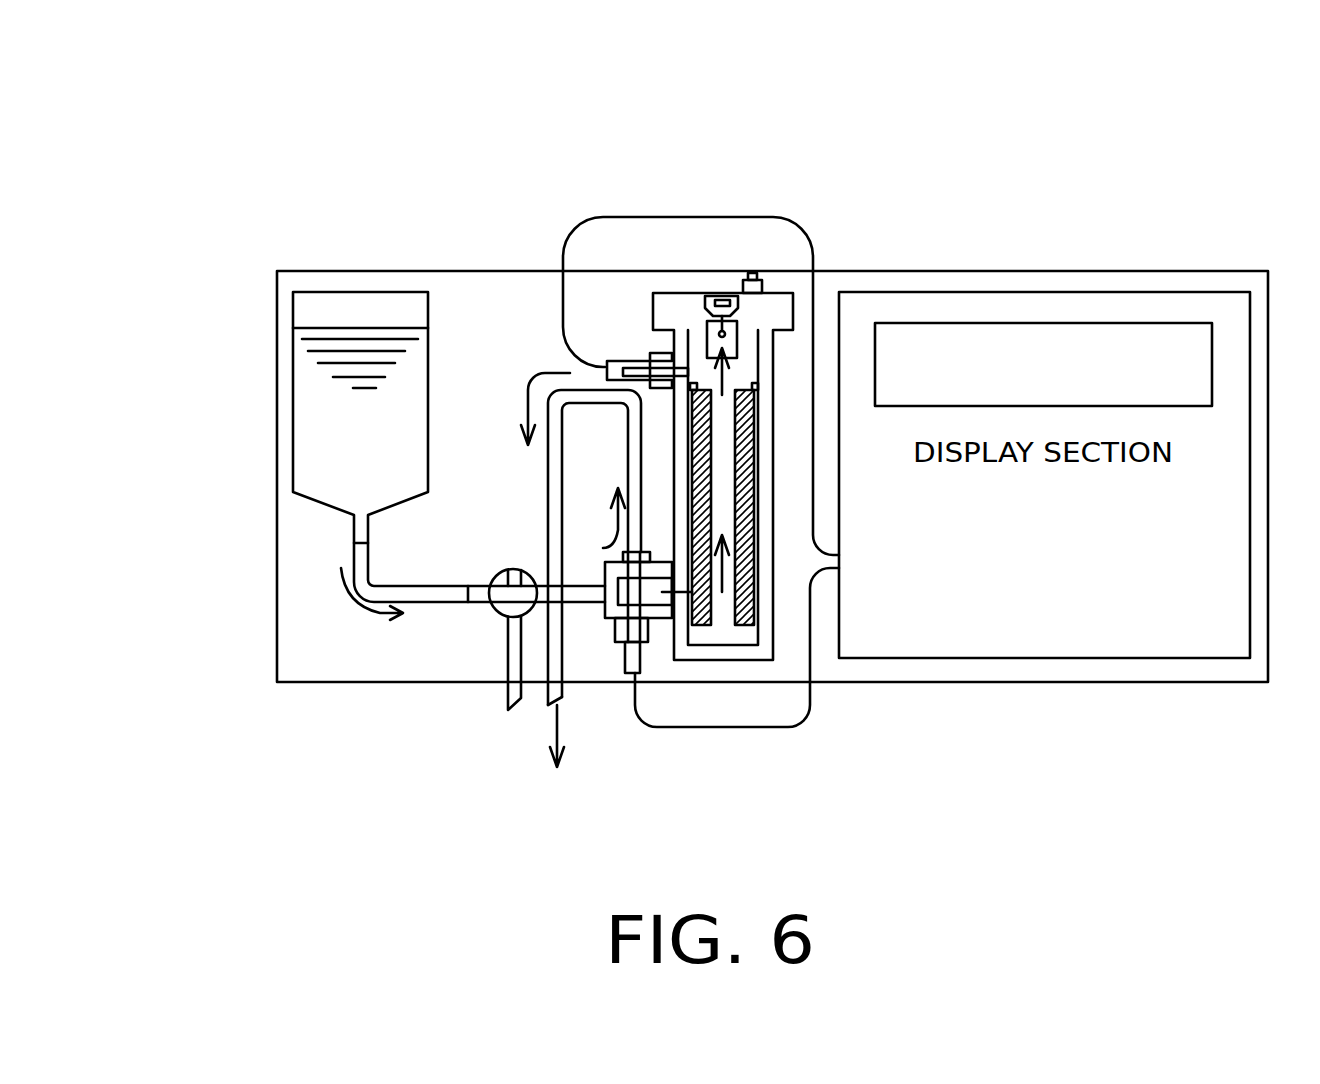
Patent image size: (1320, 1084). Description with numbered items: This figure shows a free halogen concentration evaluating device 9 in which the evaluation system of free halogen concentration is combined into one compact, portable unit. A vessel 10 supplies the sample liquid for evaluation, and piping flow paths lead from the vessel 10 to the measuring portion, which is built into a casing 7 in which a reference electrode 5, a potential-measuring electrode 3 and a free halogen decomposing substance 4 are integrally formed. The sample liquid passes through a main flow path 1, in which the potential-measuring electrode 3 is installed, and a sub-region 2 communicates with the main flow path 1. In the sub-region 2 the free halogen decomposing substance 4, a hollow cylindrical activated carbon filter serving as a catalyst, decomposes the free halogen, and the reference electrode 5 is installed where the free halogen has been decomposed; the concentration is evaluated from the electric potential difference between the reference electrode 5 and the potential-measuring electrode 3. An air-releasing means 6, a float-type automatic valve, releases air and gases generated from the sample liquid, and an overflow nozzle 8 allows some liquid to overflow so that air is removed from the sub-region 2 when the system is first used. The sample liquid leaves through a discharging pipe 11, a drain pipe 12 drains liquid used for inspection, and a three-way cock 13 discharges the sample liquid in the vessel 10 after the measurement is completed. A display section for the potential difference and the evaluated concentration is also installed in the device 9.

The main flow path 1 is at (528, 392).
The sub-region 2 is at (722, 376).
The potential-measuring electrode 3 is at (645, 630).
The free halogen decomposing substance 4 is at (740, 593).
The reference electrode 5 is at (630, 372).
The air-releasing means 6 is at (721, 296).
The casing 7 is at (767, 568).
The overflow nozzle 8 is at (753, 272).
The free halogen concentration evaluating device 9 is at (1053, 182).
The vessel 10 is at (315, 401).
The discharging pipe 11 is at (558, 660).
The drain pipe 12 is at (515, 660).
The three-way cock 13 is at (503, 607).